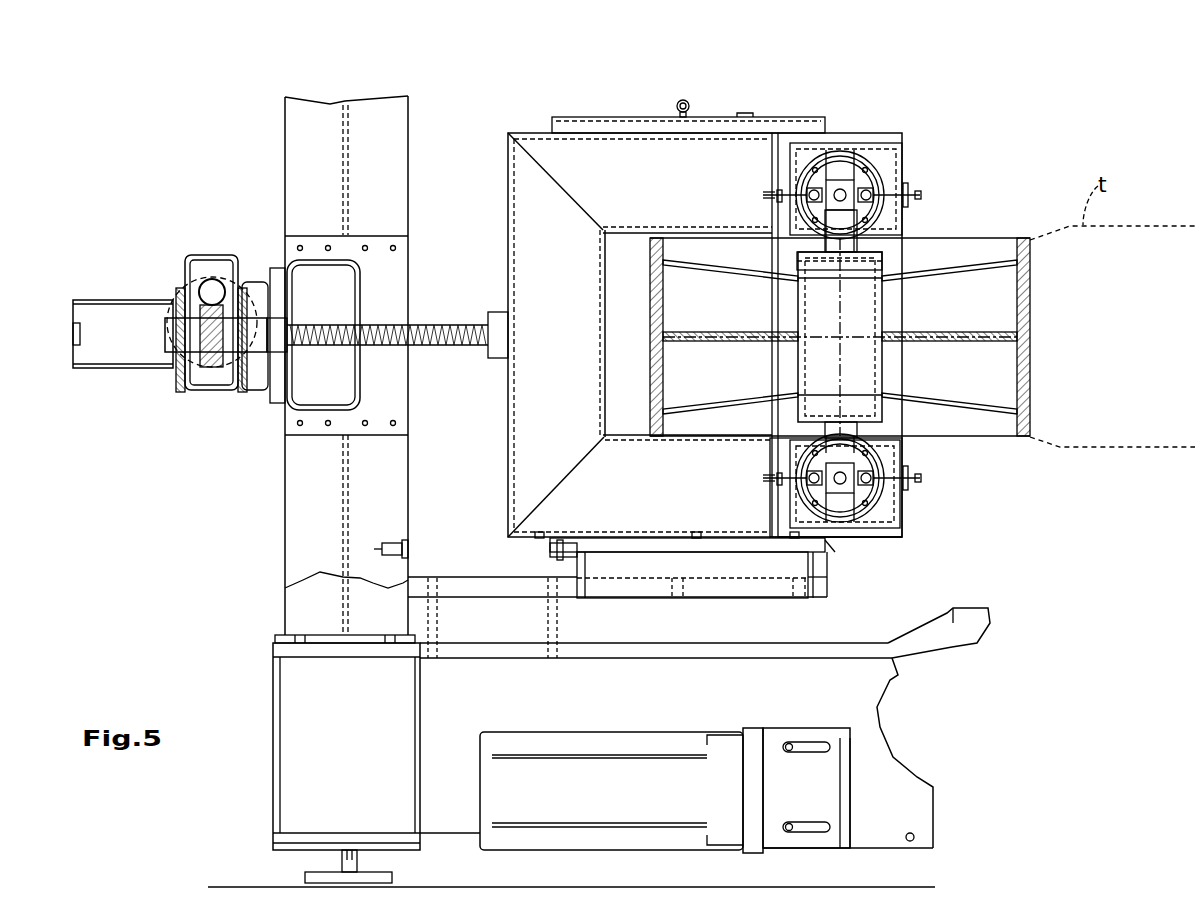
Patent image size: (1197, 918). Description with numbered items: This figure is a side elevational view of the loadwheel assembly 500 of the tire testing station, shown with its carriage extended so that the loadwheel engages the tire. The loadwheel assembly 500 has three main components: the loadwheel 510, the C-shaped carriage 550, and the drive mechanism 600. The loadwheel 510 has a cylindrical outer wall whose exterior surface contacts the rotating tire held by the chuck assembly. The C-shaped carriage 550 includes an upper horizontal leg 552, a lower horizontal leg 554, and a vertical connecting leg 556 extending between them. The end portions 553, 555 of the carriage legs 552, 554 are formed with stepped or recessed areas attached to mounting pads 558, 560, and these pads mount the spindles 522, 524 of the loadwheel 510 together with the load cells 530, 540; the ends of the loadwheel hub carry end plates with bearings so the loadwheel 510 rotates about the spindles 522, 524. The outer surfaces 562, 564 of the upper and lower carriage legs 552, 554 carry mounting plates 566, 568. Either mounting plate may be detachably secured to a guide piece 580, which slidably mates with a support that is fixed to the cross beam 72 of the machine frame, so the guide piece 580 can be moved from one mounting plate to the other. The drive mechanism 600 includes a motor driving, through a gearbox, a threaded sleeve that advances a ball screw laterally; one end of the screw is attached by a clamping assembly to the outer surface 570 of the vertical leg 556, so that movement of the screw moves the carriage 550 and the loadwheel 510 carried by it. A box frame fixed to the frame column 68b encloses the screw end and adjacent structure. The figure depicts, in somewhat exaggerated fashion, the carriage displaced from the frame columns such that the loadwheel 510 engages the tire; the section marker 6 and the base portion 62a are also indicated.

The loadwheel assembly 500 is at (922, 270).
The loadwheel 510 is at (993, 237).
The spindle 522 is at (850, 245).
The spindle 524 is at (847, 430).
The load cell 530 is at (860, 180).
The load cell 540 is at (860, 488).
The C-shaped carriage 550 is at (732, 313).
The upper horizontal leg 552 is at (597, 177).
The end portion 553 is at (897, 143).
The lower horizontal leg 554 is at (625, 511).
The end portion 555 is at (890, 453).
The vertical connecting leg 556 is at (543, 432).
The mounting pad 558 is at (877, 155).
The mounting pad 560 is at (800, 518).
The outer surface 562 is at (530, 131).
The outer surface 564 is at (530, 538).
The mounting plate 566 is at (660, 127).
The mounting plate 568 is at (812, 543).
The outer surface 570 is at (508, 463).
The guide piece 580 is at (727, 575).
The drive mechanism 600 is at (170, 255).
The column 68b is at (318, 140).
The machine base 62a is at (518, 707).
The cross beam 72 is at (273, 757).
The section line 6- 6 is at (1033, 110).